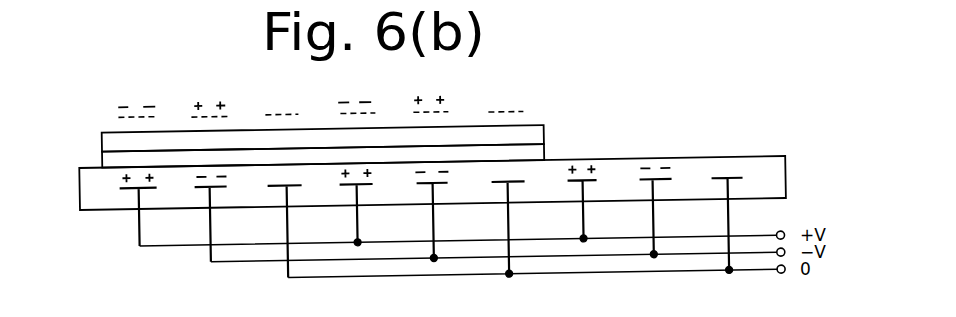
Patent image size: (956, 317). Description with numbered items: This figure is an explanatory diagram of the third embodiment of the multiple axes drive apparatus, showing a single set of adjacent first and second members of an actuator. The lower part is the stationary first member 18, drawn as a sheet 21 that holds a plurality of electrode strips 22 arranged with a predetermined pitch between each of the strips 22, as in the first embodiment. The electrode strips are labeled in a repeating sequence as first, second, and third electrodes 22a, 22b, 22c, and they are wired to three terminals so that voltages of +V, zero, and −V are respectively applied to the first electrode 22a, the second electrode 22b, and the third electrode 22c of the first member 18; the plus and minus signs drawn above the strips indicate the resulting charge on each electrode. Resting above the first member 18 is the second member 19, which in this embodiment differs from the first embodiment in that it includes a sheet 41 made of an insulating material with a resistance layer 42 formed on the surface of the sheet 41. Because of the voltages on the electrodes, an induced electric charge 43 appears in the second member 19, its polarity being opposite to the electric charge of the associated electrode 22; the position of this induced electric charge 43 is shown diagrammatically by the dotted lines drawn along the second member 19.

The first member 18 is at (438, 186).
The second member 19 is at (331, 107).
The sheet 21 is at (786, 157).
The electrode strip 22 is at (710, 208).
The first electrode 22a is at (134, 190).
The second electrode 22b is at (483, 196).
The third electrode 22c is at (205, 190).
The sheet 41 is at (545, 153).
The resistance layer 42 is at (545, 123).
The induced electric charge 43 is at (196, 100).